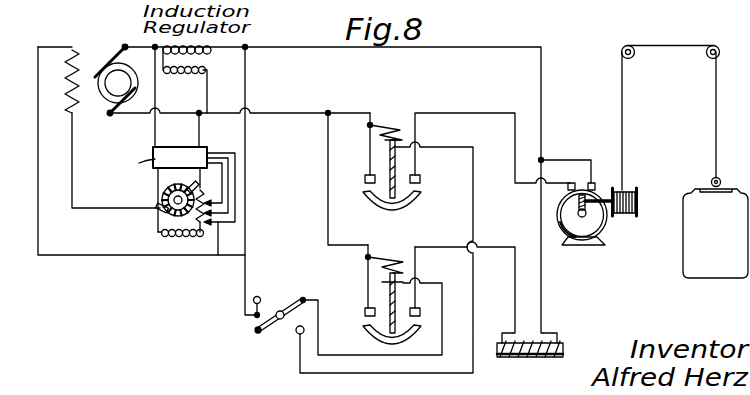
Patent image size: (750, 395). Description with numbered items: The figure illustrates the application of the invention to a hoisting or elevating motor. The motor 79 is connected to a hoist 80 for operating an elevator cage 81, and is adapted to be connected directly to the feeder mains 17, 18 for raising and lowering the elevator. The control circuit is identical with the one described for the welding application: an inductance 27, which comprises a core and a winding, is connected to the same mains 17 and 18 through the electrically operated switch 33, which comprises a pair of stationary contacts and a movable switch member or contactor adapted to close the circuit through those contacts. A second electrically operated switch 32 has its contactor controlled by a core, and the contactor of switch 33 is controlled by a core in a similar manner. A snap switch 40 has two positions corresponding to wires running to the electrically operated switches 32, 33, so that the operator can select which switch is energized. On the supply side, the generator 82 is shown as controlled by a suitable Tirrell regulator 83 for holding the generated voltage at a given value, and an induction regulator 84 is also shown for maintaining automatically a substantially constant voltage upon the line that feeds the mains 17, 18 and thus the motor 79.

The feeder main 17 is at (477, 47).
The feeder main 18 is at (476, 113).
The inductance 27 is at (530, 364).
The electrically operated switch 32 is at (390, 257).
The electrically operated switch 33 is at (391, 124).
The snap switch 40 is at (280, 307).
The motor 79 is at (592, 247).
The hoist 80 is at (638, 211).
The elevator cage 81 is at (697, 180).
The generator 82 is at (102, 60).
The Tirrell regulator 83 is at (157, 170).
The induction regulator 84 is at (206, 67).